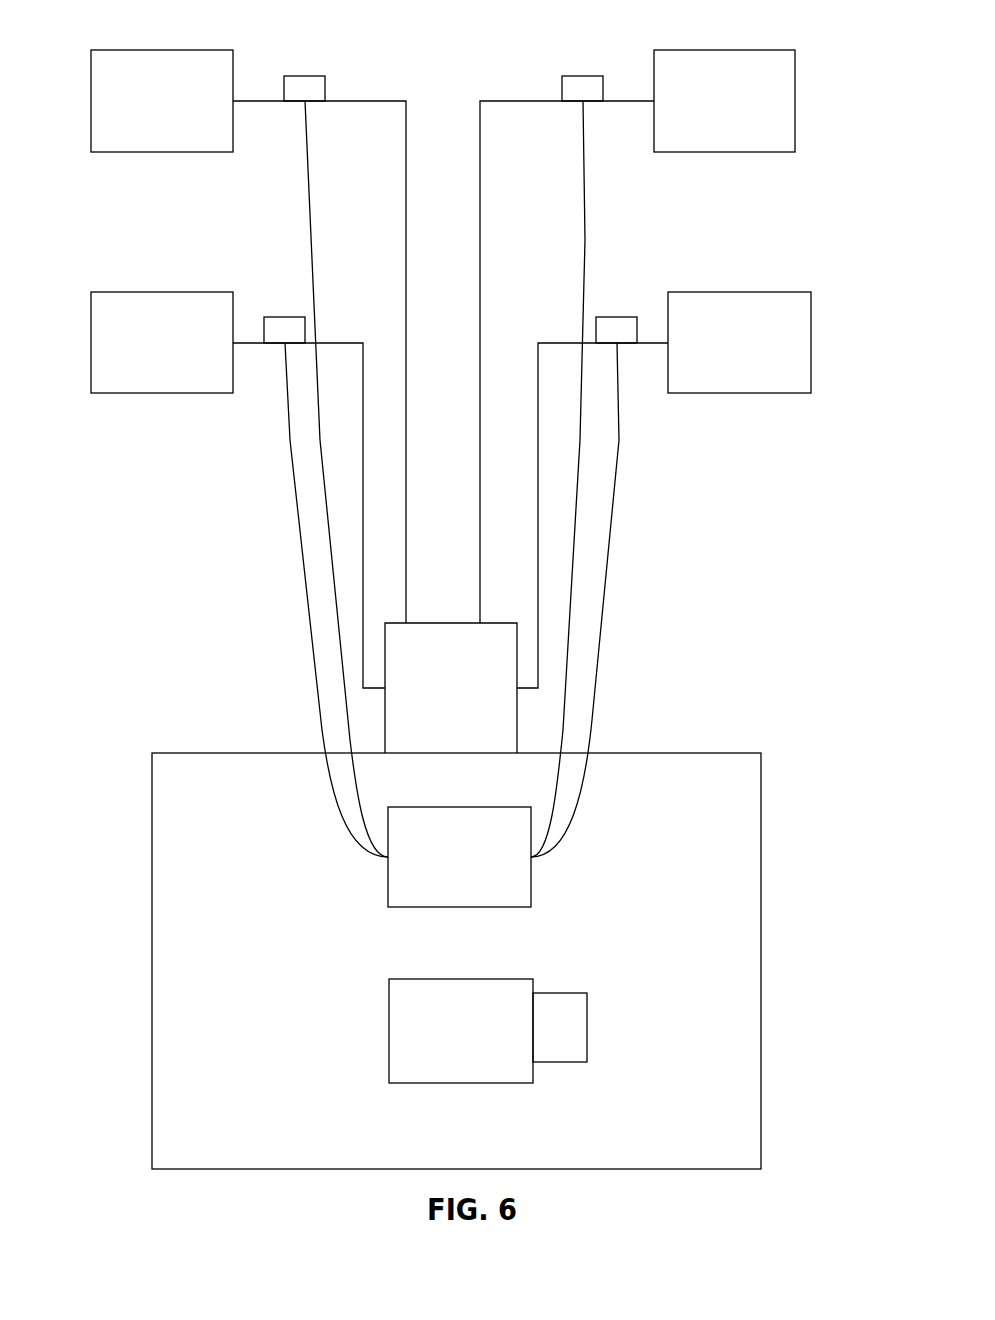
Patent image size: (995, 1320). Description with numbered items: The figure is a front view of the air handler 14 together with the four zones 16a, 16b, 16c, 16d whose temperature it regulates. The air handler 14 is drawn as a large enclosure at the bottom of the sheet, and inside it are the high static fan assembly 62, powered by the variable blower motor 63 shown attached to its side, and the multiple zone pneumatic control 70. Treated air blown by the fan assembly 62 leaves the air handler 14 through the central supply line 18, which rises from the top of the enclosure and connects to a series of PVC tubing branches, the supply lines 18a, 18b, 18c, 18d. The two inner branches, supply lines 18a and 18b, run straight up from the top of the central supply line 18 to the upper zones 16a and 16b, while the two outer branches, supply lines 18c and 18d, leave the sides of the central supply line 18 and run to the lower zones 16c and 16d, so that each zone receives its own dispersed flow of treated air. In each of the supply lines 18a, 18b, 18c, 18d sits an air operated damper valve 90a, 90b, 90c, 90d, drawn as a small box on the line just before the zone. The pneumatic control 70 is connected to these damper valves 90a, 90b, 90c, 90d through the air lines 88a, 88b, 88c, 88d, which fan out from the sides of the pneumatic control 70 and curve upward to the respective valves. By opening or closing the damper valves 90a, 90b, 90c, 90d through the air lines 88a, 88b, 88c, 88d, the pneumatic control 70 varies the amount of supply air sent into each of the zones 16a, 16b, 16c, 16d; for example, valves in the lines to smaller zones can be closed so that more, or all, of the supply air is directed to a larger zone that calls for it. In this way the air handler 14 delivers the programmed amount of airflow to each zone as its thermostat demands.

The air handler 14 is at (177, 1087).
The zone 16a is at (91, 107).
The zone 16b is at (797, 97).
The zone 16c is at (91, 317).
The zone 16d is at (811, 317).
The central supply line 18 is at (505, 647).
The supply line 18a is at (377, 101).
The supply line 18b is at (498, 101).
The supply line 18c is at (342, 343).
The supply line 18d is at (555, 343).
The fan assembly 62 is at (407, 1064).
The variable blower motor 63 is at (570, 1025).
The pneumatic control 70 is at (448, 907).
The air line 88a is at (325, 505).
The air line 88b is at (580, 483).
The air line 88c is at (322, 720).
The air line 88d is at (597, 687).
The damper valve 90a is at (303, 83).
The damper valve 90b is at (583, 87).
The damper valve 90c is at (283, 323).
The damper valve 90d is at (615, 323).